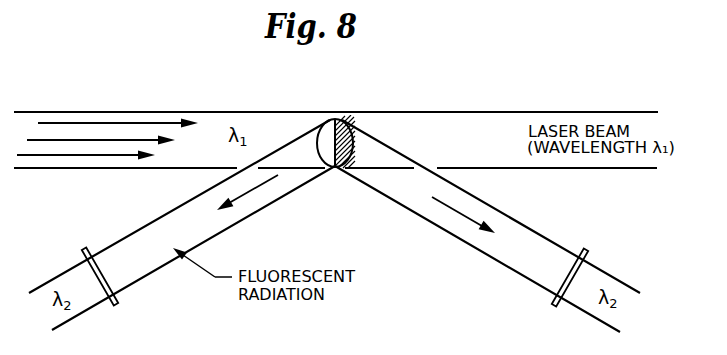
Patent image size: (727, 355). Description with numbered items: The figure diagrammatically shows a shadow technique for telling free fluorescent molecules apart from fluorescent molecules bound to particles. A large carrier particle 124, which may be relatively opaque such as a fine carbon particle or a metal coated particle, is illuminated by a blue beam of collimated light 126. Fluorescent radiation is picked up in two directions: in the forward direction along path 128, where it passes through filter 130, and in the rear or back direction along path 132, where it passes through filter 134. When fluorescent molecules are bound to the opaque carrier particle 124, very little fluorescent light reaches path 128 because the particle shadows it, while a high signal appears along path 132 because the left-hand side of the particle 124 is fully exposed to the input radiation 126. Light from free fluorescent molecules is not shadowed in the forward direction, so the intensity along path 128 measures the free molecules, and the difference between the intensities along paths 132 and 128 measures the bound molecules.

The carrier particle 124 is at (355, 140).
The beam of collimated light 126 is at (117, 140).
The forward path 128 is at (463, 213).
The filter 130 is at (588, 253).
The rear path 132 is at (260, 202).
The filter 134 is at (118, 298).